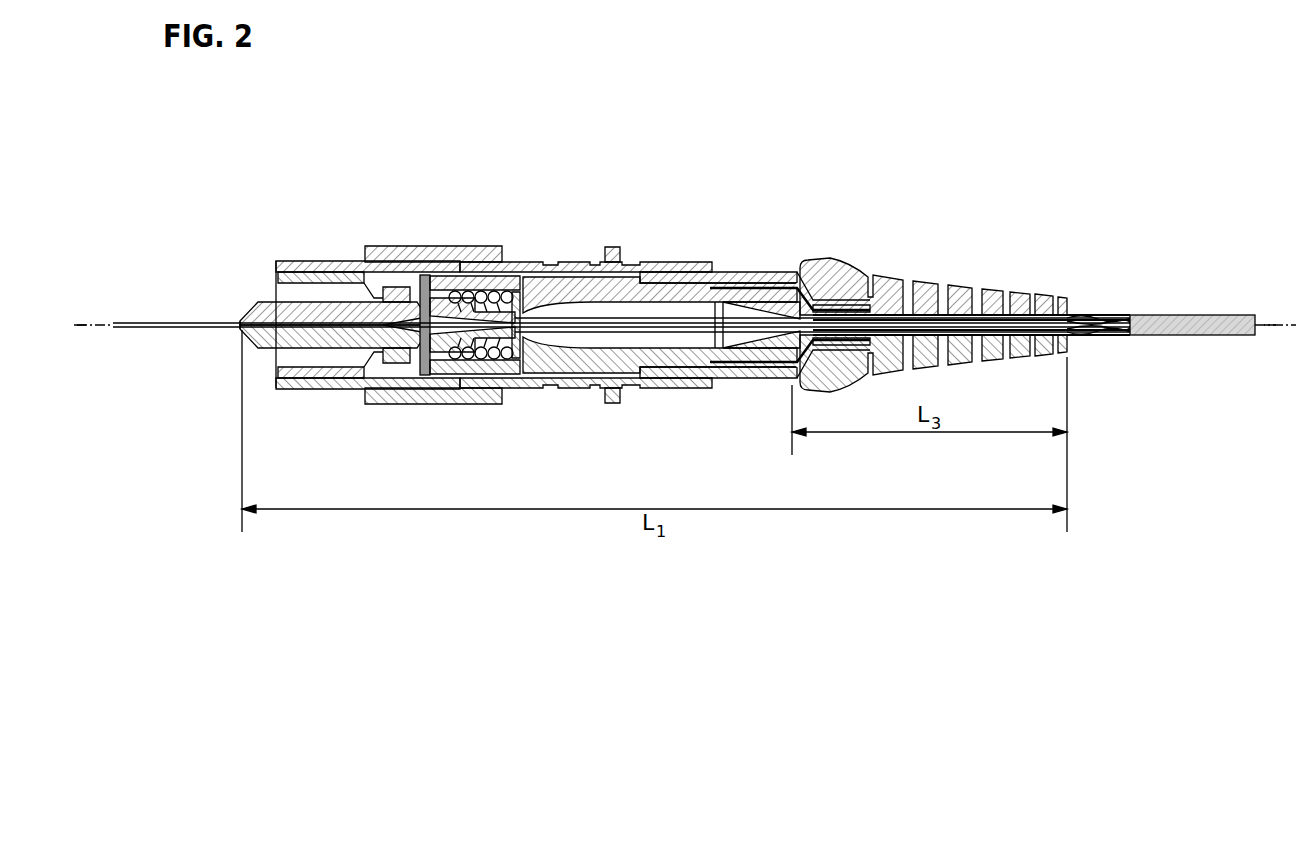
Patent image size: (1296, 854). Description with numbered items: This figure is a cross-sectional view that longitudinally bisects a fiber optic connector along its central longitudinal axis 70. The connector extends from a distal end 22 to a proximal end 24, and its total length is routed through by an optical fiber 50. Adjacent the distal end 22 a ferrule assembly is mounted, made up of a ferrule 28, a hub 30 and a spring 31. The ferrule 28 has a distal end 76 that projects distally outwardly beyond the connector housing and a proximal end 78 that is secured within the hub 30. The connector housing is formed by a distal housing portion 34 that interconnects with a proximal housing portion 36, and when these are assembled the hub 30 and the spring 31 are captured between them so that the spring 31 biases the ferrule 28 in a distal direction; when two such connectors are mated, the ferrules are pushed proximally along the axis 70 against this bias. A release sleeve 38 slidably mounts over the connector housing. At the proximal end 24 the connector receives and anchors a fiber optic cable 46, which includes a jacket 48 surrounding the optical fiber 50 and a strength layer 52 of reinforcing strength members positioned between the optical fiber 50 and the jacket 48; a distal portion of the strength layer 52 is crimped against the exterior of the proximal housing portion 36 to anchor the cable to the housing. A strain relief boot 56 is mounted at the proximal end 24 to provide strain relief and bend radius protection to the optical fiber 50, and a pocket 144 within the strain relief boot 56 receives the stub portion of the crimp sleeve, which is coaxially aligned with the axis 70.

The distal end 22 is at (207, 285).
The proximal end 24 is at (1115, 267).
The ferrule 28 is at (323, 303).
The hub 30 is at (397, 287).
The spring 31 is at (510, 357).
The distal housing portion 34 is at (392, 377).
The proximal housing portion 36 is at (618, 370).
The release sleeve 38 is at (448, 245).
The fiber optic cable 46 is at (1194, 352).
The jacket 48 is at (1118, 317).
The optical fiber 50 is at (568, 324).
The strength layer 52 is at (752, 288).
The strain relief boot 56 is at (898, 278).
The central longitudinal axis 70 is at (80, 324).
The distal end of ferrule 76 is at (242, 330).
The proximal end of ferrule 78 is at (429, 320).
The pocket 144 is at (845, 306).